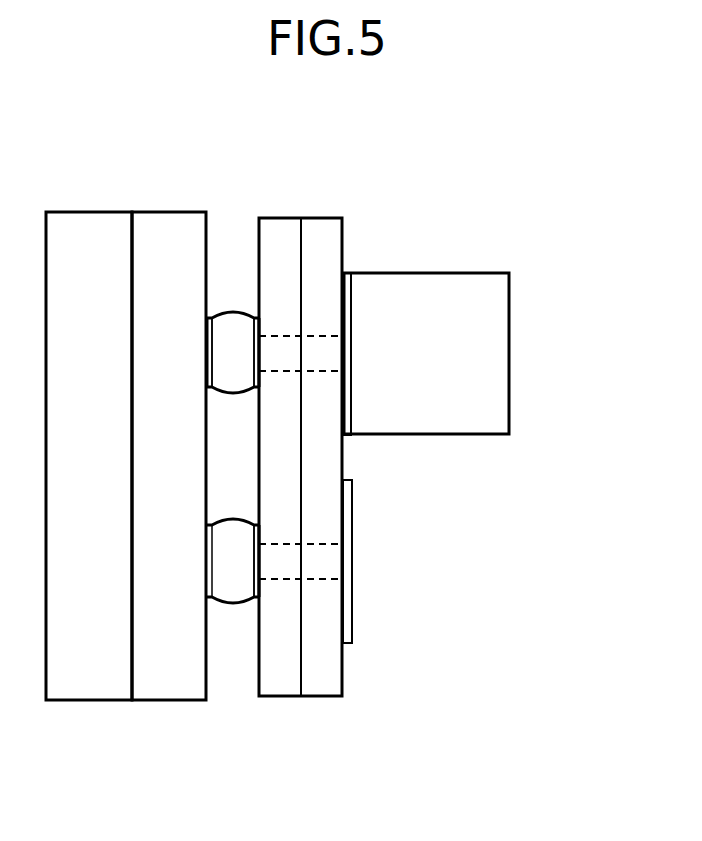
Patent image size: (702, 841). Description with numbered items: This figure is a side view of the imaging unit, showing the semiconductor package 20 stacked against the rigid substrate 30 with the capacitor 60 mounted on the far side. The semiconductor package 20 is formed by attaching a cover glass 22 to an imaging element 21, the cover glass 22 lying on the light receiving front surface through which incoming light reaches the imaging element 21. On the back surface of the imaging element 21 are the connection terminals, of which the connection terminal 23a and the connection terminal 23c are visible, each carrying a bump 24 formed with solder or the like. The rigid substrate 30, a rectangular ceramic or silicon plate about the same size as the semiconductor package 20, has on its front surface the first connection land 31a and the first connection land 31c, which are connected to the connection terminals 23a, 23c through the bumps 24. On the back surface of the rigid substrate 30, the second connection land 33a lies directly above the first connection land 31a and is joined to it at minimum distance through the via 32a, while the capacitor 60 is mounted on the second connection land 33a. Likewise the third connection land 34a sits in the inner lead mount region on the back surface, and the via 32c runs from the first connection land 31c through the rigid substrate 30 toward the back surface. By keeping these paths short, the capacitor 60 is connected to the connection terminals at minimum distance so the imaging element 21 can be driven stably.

The semiconductor package 20 is at (126, 463).
The imaging element 21 is at (164, 225).
The cover glass 22 is at (90, 225).
The connection terminal 23a is at (212, 317).
The connection terminal 23c is at (208, 602).
The bump 24 is at (232, 312).
The rigid substrate 30 is at (322, 442).
The first connection land 31a is at (257, 317).
The first connection land 31c is at (252, 602).
The via 32a is at (318, 336).
The via 32c is at (325, 580).
The second connection land 33a is at (351, 308).
The third connection land 34a is at (352, 612).
The capacitor 60 is at (510, 340).